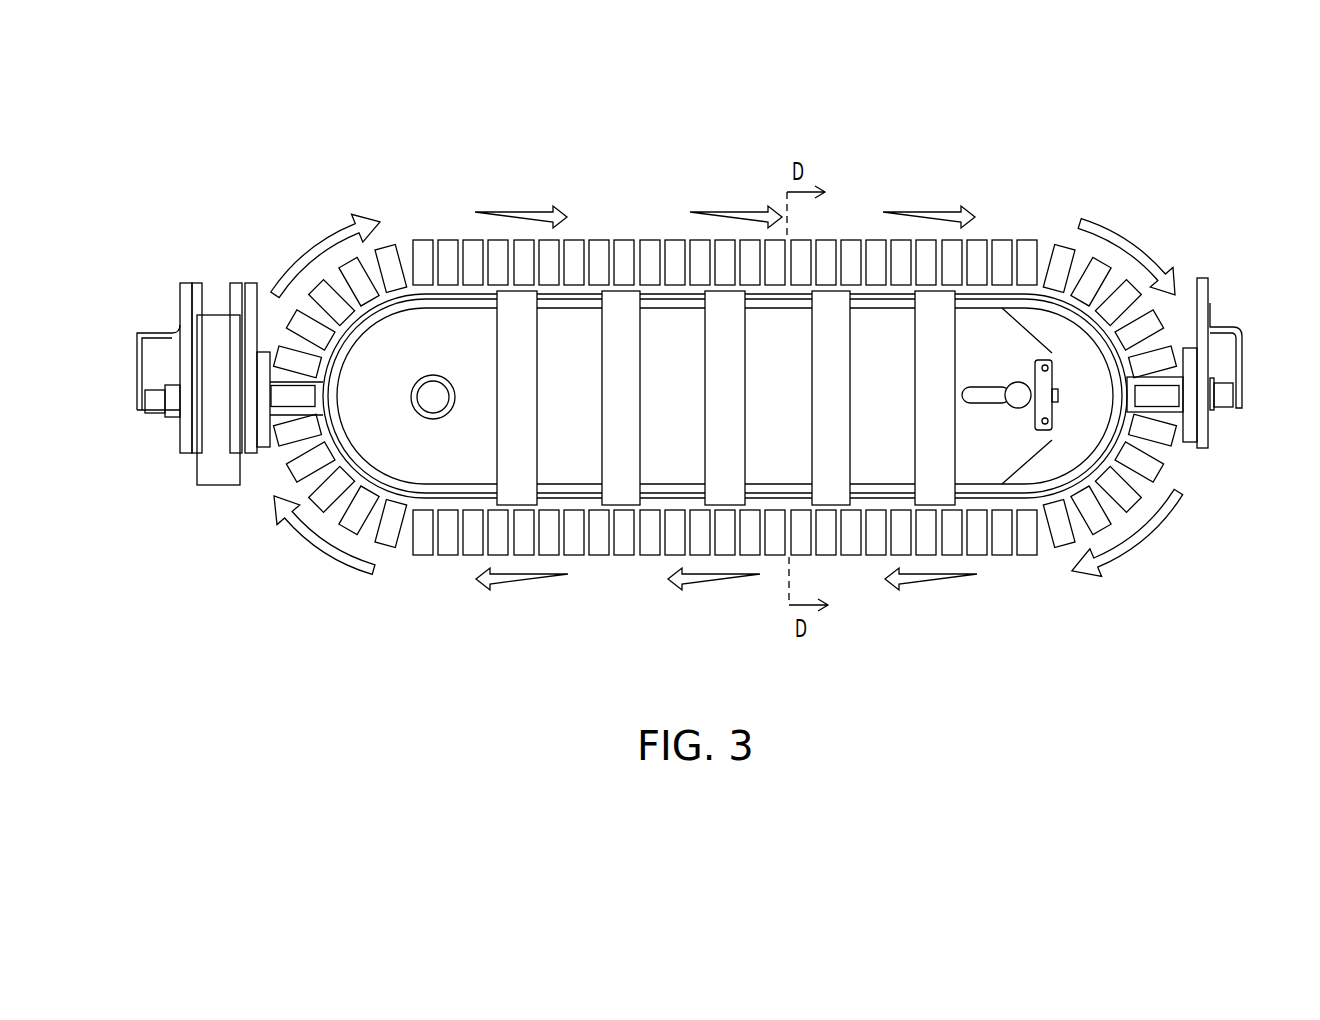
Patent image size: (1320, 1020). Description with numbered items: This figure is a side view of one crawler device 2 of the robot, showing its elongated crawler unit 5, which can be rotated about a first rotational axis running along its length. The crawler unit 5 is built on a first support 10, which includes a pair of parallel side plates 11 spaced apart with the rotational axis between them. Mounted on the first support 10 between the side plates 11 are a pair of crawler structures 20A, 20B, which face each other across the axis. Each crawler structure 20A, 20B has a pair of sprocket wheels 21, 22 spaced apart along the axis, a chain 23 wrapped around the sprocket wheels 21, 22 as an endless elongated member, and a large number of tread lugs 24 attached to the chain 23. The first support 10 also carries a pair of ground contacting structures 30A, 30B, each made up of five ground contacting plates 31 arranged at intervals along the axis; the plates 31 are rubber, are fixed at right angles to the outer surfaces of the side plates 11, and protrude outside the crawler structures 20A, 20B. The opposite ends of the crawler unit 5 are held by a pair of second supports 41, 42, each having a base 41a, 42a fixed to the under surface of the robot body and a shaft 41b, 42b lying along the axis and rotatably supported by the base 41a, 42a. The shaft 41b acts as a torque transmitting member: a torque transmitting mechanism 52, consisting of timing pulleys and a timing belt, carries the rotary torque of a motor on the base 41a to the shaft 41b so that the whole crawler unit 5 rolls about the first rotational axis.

The crawler device 2 is at (717, 364).
The crawler unit 5 is at (447, 208).
The first support 10 is at (725, 473).
The side plate 11 is at (582, 462).
The crawler structure 20A is at (725, 334).
The crawler structure 20B is at (725, 334).
The sprocket wheel 21 is at (411, 498).
The sprocket wheel 22 is at (1025, 305).
The chain 23 is at (680, 300).
The tread lug 24 is at (598, 240).
The ground contacting structure 30A is at (1037, 401).
The ground contacting structure 30B is at (1037, 401).
The ground contacting plate 31 is at (740, 386).
The second support 41 is at (230, 420).
The base 41a is at (260, 297).
The shaft 41b is at (272, 447).
The second support 42 is at (1212, 406).
The base 42a is at (1200, 447).
The shaft 42b is at (1175, 413).
The torque transmitting mechanism 52 is at (215, 503).